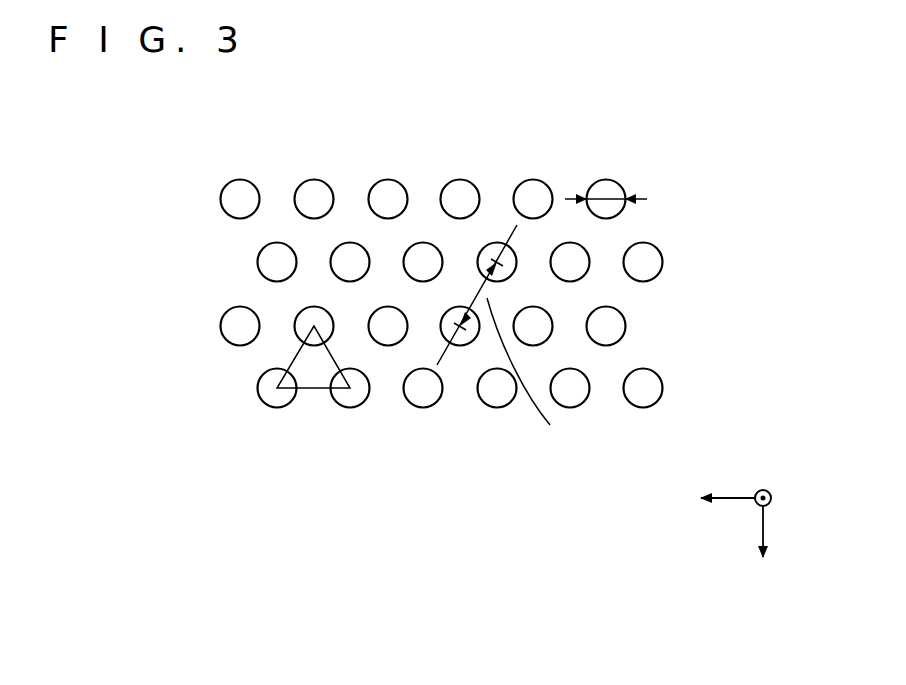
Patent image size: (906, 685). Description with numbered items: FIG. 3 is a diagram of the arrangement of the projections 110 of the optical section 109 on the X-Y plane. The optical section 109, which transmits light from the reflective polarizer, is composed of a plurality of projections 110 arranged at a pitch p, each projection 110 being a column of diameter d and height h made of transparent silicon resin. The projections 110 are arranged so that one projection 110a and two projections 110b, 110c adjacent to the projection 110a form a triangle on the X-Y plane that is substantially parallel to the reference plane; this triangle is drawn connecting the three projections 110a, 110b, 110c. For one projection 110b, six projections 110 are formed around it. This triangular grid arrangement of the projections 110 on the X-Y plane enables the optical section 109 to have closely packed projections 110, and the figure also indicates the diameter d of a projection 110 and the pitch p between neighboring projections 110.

The optical section 109 is at (540, 109).
The projections 110 is at (316, 186).
The projection 110a is at (268, 403).
The projection 110b is at (305, 318).
The projection 110c is at (353, 405).